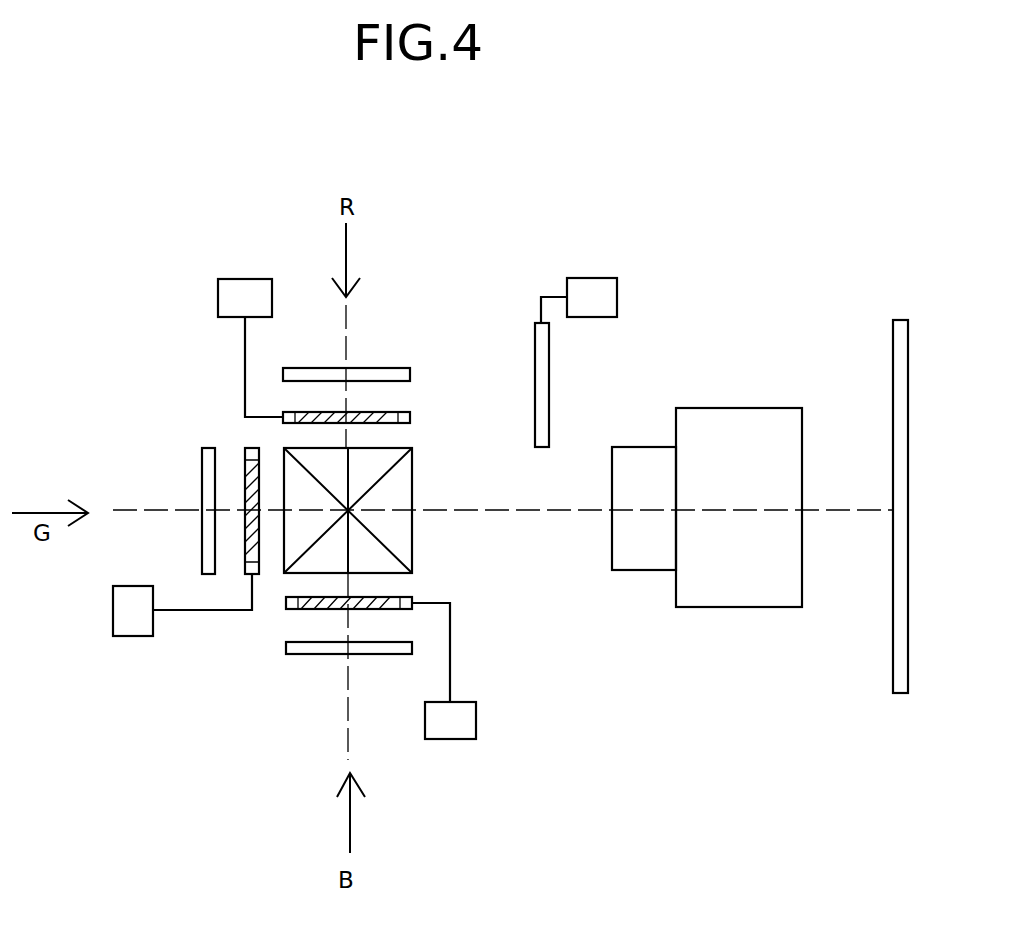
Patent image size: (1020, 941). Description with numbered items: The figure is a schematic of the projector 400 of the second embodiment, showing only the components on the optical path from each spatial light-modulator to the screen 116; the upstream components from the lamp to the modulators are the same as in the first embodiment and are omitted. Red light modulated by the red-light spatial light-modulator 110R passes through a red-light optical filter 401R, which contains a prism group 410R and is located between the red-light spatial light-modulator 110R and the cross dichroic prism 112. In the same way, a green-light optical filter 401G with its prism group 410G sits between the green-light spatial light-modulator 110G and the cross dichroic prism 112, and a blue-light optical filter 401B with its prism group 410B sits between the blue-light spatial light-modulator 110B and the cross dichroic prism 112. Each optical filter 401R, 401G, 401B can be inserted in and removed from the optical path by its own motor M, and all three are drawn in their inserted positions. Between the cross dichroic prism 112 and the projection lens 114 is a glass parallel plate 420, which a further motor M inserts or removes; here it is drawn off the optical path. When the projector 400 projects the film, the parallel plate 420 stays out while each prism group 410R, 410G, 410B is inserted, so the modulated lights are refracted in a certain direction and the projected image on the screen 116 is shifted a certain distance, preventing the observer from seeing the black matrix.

The projector 400 is at (500, 232).
The red-light spatial light-modulator 110R is at (393, 368).
The red-light prism group 410R is at (380, 413).
The red-light optical filter 401R is at (410, 417).
The green-light spatial light-modulator 110G is at (202, 487).
The green-light prism group 410G is at (245, 473).
The green-light optical filter 401G is at (250, 448).
The blue-light spatial light-modulator 110B is at (312, 654).
The blue-light prism group 410B is at (310, 609).
The blue-light optical filter 401B is at (412, 603).
The cross dichroic prism 112 is at (412, 498).
The parallel plate 420 is at (549, 375).
The projection lens 114 is at (757, 408).
The screen 116 is at (893, 350).
The motor M is at (238, 279).